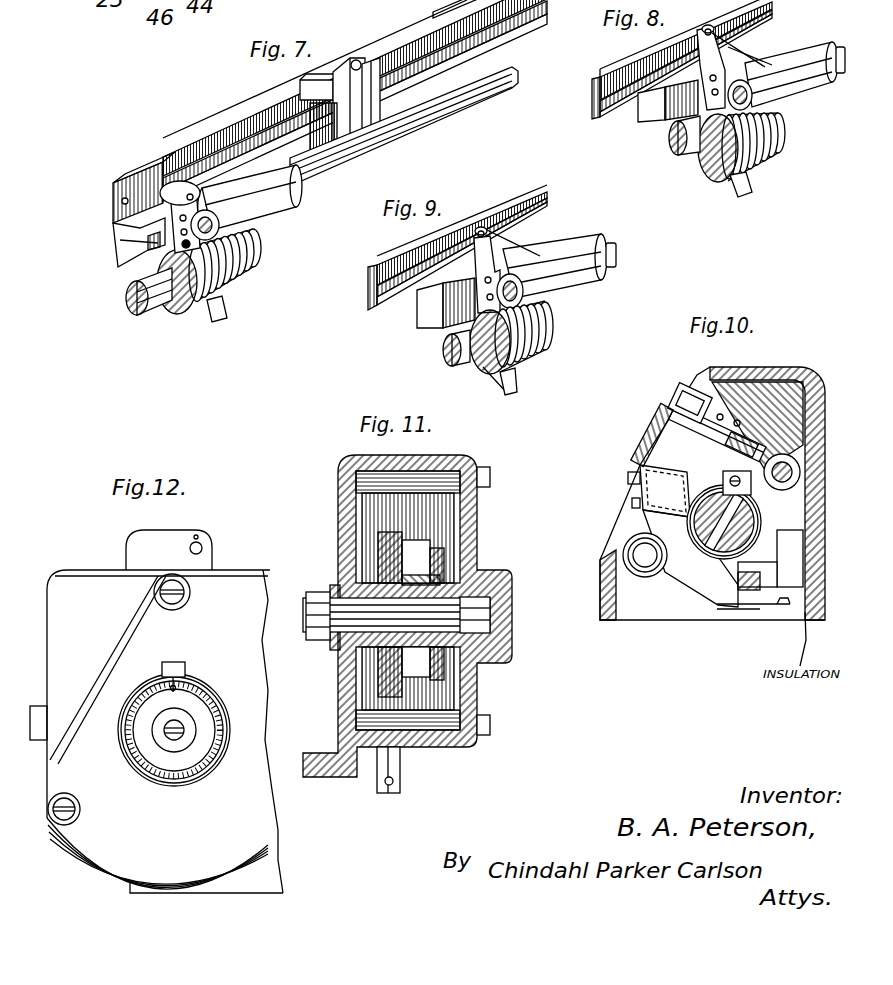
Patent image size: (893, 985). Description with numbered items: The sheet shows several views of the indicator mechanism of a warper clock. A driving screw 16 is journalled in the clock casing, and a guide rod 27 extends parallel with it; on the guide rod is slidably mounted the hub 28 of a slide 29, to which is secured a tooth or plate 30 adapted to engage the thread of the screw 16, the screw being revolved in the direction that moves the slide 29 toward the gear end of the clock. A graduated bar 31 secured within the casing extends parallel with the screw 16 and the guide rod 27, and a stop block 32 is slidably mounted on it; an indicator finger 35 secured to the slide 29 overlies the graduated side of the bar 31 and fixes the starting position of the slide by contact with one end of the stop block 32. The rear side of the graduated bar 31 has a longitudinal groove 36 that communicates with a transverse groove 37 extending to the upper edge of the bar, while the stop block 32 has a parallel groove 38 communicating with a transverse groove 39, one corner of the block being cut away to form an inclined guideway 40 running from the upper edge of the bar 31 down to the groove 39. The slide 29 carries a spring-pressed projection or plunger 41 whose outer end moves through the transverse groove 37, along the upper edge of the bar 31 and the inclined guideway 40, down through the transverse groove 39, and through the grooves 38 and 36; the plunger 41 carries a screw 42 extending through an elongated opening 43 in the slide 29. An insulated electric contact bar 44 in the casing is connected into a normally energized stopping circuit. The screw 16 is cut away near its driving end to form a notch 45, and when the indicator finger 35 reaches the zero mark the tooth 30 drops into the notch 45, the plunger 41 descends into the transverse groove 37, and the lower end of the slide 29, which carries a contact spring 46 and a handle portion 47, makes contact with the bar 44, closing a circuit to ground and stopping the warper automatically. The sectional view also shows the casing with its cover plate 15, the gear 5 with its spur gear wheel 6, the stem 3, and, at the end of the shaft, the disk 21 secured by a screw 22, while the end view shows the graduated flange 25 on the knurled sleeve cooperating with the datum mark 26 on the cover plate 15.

In FIG. 11, the stem 3 is at (393, 770).
In FIG. 11, the gear 5 is at (378, 535).
In FIG. 11, the spur gear wheel 6 is at (445, 560).
In FIG. 11, the cover plate 15 is at (470, 528).
In FIG. 12, the cover plate 15 is at (250, 610).
In FIG. 7, the screw 16 is at (258, 249).
In FIG. 8, the screw 16 is at (780, 139).
In FIG. 9, the screw 16 is at (548, 335).
In FIG. 12, the disk 21 is at (155, 730).
In FIG. 12, the screw 22 is at (168, 766).
In FIG. 12, the graduated flange 25 is at (205, 692).
In FIG. 12, the datum mark 26 is at (180, 665).
In FIG. 7, the guide rod 27 is at (485, 90).
In FIG. 8, the guide rod 27 is at (838, 45).
In FIG. 9, the guide rod 27 is at (617, 248).
In FIG. 7, the hub 28 is at (285, 193).
In FIG. 8, the hub 28 is at (808, 72).
In FIG. 9, the hub 28 is at (585, 262).
In FIG. 10, the hub 28 is at (790, 455).
In FIG. 10, the slide 29 is at (687, 570).
In FIG. 10, the tooth or plate 30 is at (750, 500).
In FIG. 7, the graduated bar 31 is at (116, 182).
In FIG. 8, the graduated bar 31 is at (600, 78).
In FIG. 7, the stop block 32 is at (343, 83).
In FIG. 10, the stop block 32 is at (688, 390).
In FIG. 8, the indicator finger 35 is at (657, 44).
In FIG. 10, the indicator finger 35 is at (665, 425).
In FIG. 7, the longitudinal groove 36 is at (233, 148).
In FIG. 8, the longitudinal groove 36 is at (772, 10).
In FIG. 9, the longitudinal groove 36 is at (540, 208).
In FIG. 7, the transverse groove 37 is at (158, 166).
In FIG. 7, the groove 38 is at (337, 143).
In FIG. 7, the transverse groove 39 is at (365, 83).
In FIG. 7, the inclined surface or guideway 40 is at (332, 50).
In FIG. 7, the spring-pressed projection or plunger 41 is at (165, 185).
In FIG. 8, the spring-pressed projection or plunger 41 is at (702, 32).
In FIG. 9, the spring-pressed projection or plunger 41 is at (472, 243).
In FIG. 10, the spring-pressed projection or plunger 41 is at (728, 443).
In FIG. 8, the screw 42 is at (710, 26).
In FIG. 9, the screw 42 is at (484, 228).
In FIG. 10, the screw 42 is at (720, 418).
In FIG. 10, the elongated opening 43 is at (737, 420).
In FIG. 10, the electric contact bar 44 is at (750, 612).
In FIG. 10, the notch 45 is at (747, 527).
In FIG. 10, the contact spring 46 is at (777, 600).
In FIG. 10, the handle portion 47 is at (630, 547).